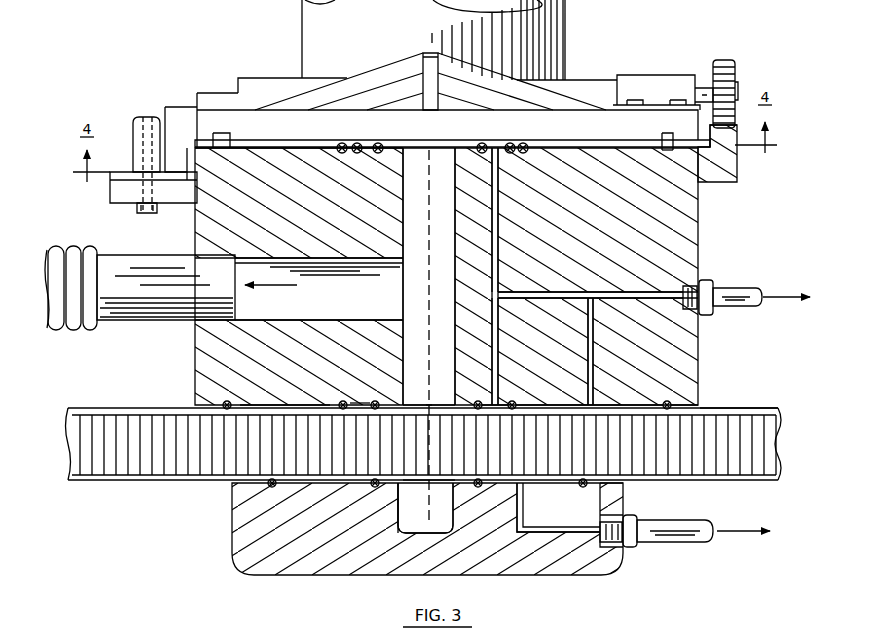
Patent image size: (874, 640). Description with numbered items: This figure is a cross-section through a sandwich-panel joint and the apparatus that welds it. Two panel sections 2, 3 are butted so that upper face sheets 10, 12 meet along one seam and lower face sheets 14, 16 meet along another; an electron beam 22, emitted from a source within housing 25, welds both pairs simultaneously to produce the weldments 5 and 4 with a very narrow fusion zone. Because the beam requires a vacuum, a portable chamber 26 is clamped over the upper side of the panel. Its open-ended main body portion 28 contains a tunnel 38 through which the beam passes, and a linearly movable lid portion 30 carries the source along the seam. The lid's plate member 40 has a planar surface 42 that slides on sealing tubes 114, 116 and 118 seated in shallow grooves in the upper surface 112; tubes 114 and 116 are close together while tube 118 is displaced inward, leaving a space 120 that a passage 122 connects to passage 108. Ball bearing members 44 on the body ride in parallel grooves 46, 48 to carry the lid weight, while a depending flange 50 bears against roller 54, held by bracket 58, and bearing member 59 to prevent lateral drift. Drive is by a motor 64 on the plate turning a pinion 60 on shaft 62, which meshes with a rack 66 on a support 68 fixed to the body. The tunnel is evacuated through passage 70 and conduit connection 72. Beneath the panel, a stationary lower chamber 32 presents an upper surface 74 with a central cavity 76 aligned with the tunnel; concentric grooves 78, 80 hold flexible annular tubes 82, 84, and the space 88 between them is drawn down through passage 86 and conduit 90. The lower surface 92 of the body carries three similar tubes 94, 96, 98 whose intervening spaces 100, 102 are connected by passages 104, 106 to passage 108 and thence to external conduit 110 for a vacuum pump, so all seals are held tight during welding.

The panel section 2 is at (86, 408).
The panel section 3 is at (760, 408).
The weldment 4 is at (425, 508).
The weldment 5 is at (428, 404).
The upper face sheet 10 is at (416, 404).
The upper face sheet 12 is at (441, 404).
The lower face sheet 14 is at (420, 479).
The lower face sheet 16 is at (441, 479).
The electron beam 22 is at (428, 276).
The housing 25 is at (566, 15).
The portable chamber 26 is at (176, 100).
The main body portion 28 is at (690, 225).
The upper closure or lid portion 30 is at (203, 107).
The stationary lower chamber 32 is at (232, 538).
The tunnel 38 is at (405, 190).
The plate or base member 40 is at (258, 110).
The substantially planar surface 42 is at (295, 142).
The ball bearing members 44 is at (672, 142).
The groove 46 is at (215, 140).
The groove 48 is at (663, 140).
The downwardly depending flange 50 is at (173, 128).
The roller 54 is at (138, 137).
The bracket 58 is at (126, 193).
The bearing member 59 is at (189, 182).
The pinion 60 is at (731, 62).
The shaft 62 is at (703, 93).
The motor 64 is at (658, 80).
The rack 66 is at (736, 124).
The support 68 is at (727, 170).
The passage 70 is at (319, 289).
The conduit connection 72 is at (126, 306).
The upper surface 74 is at (607, 485).
The cavity 76 is at (398, 517).
The groove 78 is at (275, 487).
The groove 80 is at (374, 487).
The annular tube 82 is at (477, 487).
The annular tube 84 is at (583, 488).
The passage 86 is at (540, 484).
The space 88 is at (537, 533).
The conduit 90 is at (674, 531).
The lower surface 92 is at (700, 407).
The annular tube 94 is at (229, 402).
The annular tube 96 is at (341, 402).
The annular tube 98 is at (374, 402).
The space 100 is at (273, 407).
The space 102 is at (358, 401).
The passage 104 is at (593, 375).
The passage 106 is at (498, 365).
The passage 108 is at (604, 296).
The external conduit 110 is at (746, 290).
The upper surface 112 is at (268, 152).
The annular tube 114 is at (340, 155).
The annular tube 116 is at (357, 154).
The annular tube 118 is at (382, 146).
The space 120 is at (500, 145).
The passage 122 is at (498, 203).